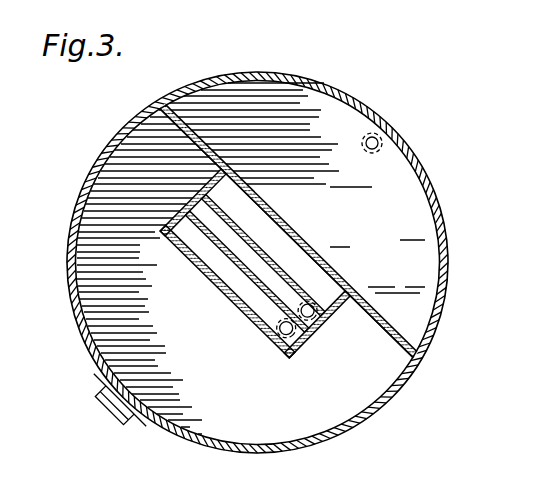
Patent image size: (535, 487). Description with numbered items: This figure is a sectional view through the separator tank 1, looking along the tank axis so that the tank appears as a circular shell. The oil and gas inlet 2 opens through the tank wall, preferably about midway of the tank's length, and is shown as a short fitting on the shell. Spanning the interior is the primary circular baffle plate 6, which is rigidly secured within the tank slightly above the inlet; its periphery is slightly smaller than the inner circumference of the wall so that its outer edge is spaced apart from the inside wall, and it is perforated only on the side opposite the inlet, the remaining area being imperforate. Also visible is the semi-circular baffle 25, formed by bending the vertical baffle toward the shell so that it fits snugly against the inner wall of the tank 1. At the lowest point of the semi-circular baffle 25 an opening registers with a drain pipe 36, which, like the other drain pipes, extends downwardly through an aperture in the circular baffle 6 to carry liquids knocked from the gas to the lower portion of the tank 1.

The separator tank 1 is at (97, 164).
The oil and gas inlet 2 is at (103, 407).
The primary circular baffle plate 6 is at (103, 330).
The semi-circular baffle 25 is at (405, 208).
The drain pipe 36 is at (384, 141).